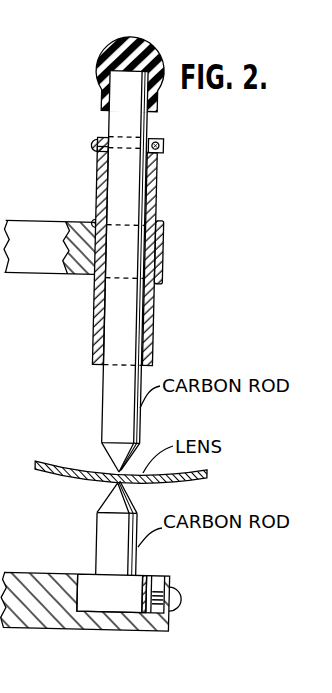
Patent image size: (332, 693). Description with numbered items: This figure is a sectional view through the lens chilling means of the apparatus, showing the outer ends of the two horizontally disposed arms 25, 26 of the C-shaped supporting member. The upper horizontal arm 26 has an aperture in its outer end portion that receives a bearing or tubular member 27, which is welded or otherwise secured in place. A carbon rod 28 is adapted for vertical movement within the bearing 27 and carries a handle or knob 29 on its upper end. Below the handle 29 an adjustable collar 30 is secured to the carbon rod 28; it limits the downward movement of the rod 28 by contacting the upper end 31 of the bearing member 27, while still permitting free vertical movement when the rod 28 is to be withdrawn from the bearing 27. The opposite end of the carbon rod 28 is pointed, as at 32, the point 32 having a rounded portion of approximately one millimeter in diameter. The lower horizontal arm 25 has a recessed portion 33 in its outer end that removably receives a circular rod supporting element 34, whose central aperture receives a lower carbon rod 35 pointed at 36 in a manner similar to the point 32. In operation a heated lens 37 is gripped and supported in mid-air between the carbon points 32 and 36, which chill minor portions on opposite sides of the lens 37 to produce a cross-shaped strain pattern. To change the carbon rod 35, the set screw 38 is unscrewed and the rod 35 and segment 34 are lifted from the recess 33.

The lower horizontally disposed arm 25 is at (58, 630).
The horizontal arm 26 is at (44, 222).
The bearing or tubular member 27 is at (156, 180).
The carbon rod 28 is at (101, 392).
The handle or knob 29 is at (161, 52).
The adjustable collar 30 is at (163, 139).
The upper end of the bearing member 31 is at (100, 141).
The point 32 is at (103, 468).
The recessed portion 33 is at (78, 577).
The circular rod supporting element 34 is at (136, 590).
The carbon rod 35 is at (140, 520).
The pointed portion 36 is at (114, 484).
The heated lens 37 is at (207, 470).
The set screw 38 is at (181, 590).